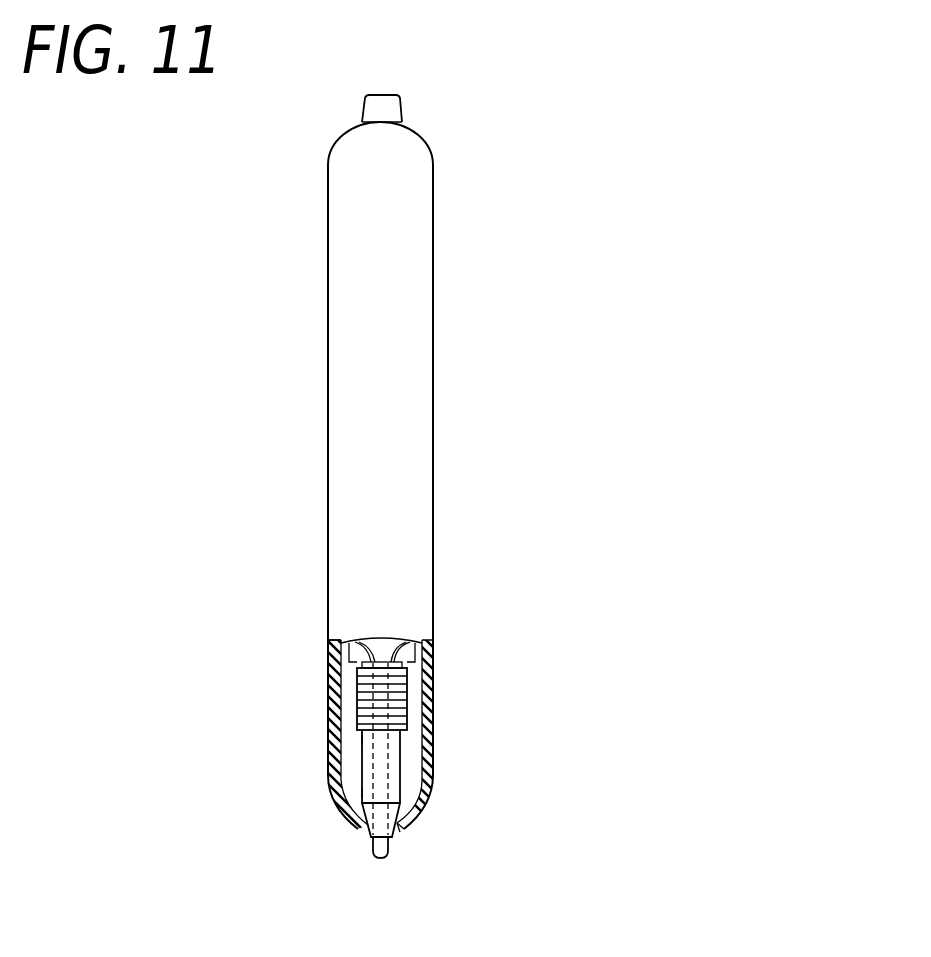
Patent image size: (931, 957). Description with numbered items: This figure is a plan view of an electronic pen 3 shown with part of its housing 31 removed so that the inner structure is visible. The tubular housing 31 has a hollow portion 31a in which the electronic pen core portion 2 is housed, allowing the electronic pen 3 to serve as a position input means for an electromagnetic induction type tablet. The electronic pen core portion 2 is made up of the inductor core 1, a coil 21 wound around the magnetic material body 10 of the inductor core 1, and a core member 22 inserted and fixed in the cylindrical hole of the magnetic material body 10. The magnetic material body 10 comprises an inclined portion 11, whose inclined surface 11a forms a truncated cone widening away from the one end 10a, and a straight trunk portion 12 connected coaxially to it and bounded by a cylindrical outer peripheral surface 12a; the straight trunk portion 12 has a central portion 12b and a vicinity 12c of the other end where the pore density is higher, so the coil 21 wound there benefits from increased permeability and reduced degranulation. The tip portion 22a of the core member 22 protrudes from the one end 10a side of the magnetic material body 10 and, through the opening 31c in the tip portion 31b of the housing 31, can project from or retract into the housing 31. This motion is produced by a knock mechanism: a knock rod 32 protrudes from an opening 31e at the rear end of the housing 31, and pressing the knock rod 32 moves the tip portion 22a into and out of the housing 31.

The electronic pen 3 is at (567, 121).
The housing 31 is at (433, 278).
The hollow portion 31a is at (331, 647).
The tip portion 31b is at (406, 828).
The opening 31c is at (400, 832).
The opening 31e is at (404, 123).
The knock rod 32 is at (396, 97).
The inductor core 1 is at (398, 790).
The electronic pen core portion 2 is at (402, 682).
The coil 21 is at (407, 714).
The core member 22 is at (406, 640).
The tip portion 22a is at (378, 860).
The magnetic material body 10 is at (396, 764).
The one end 10a is at (372, 838).
The inclined portion 11 is at (370, 822).
The inclined surface 11a is at (367, 830).
The straight trunk portion 12 is at (367, 763).
The outer peripheral surface 12a is at (363, 740).
The central portion 12b is at (362, 793).
The vicinity of the other end 12c is at (352, 664).